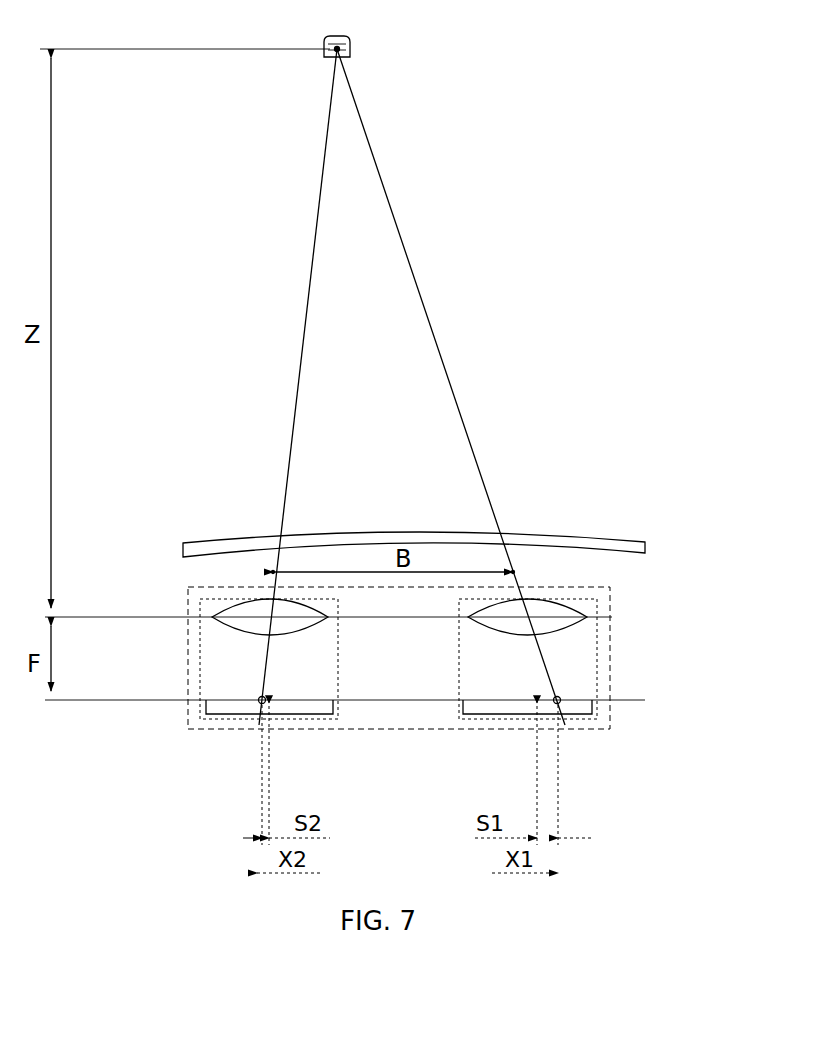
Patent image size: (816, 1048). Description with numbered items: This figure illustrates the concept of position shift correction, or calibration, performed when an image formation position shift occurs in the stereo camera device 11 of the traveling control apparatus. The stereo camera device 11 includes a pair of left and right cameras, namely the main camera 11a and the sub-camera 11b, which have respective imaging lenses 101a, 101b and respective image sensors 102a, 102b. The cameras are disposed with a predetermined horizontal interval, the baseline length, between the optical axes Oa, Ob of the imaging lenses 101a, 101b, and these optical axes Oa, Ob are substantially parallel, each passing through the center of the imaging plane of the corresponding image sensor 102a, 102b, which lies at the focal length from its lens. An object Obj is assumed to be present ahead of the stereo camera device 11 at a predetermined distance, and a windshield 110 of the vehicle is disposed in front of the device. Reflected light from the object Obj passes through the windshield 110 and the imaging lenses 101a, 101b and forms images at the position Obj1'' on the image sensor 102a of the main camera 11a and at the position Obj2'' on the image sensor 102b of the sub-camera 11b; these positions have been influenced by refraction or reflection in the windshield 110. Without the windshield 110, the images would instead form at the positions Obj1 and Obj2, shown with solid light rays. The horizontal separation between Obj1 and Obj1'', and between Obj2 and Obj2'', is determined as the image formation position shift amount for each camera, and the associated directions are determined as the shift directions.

The object Obj is at (352, 38).
The windshield 110 is at (645, 545).
The stereo camera device 11 is at (620, 616).
The main camera 11a is at (615, 650).
The sub-camera 11b is at (196, 656).
The imaging lens 101a is at (582, 610).
The imaging lens 101b is at (215, 606).
The image sensor 102a is at (598, 708).
The image sensor 102b is at (206, 708).
The optical axis Oa is at (513, 572).
The optical axis Ob is at (273, 572).
The image formation position Obj1 is at (593, 771).
The image formation position Obj2 is at (228, 771).
The image formation position Obj1'' is at (479, 770).
The image formation position Obj2'' is at (308, 770).